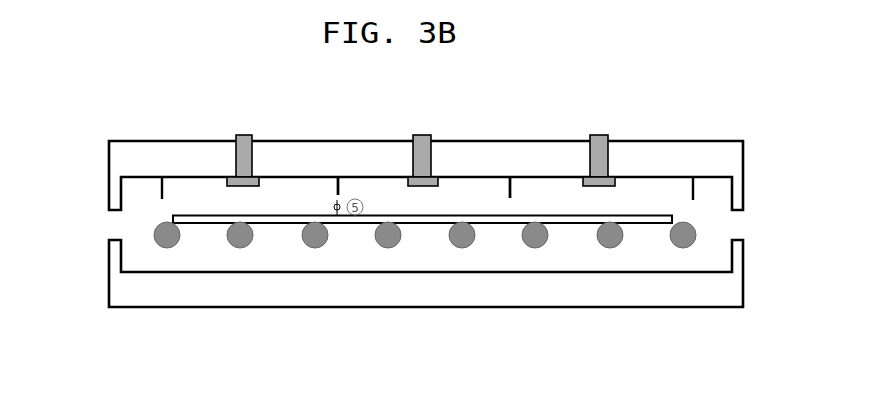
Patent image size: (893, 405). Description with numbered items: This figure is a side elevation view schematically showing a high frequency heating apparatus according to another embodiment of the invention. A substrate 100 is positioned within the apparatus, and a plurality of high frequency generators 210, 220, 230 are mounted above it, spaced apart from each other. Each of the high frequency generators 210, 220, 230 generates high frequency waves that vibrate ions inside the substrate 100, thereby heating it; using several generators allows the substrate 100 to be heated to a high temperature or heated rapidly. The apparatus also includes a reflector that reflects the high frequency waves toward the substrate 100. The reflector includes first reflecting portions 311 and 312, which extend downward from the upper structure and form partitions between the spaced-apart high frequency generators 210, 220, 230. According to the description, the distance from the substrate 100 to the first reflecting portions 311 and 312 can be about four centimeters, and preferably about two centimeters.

The substrate 100 is at (173, 218).
The high frequency generator 210 is at (245, 135).
The high frequency generator 220 is at (422, 135).
The high frequency generator 230 is at (598, 135).
The first reflecting portion 311 is at (337, 197).
The first reflecting portion 312 is at (510, 198).